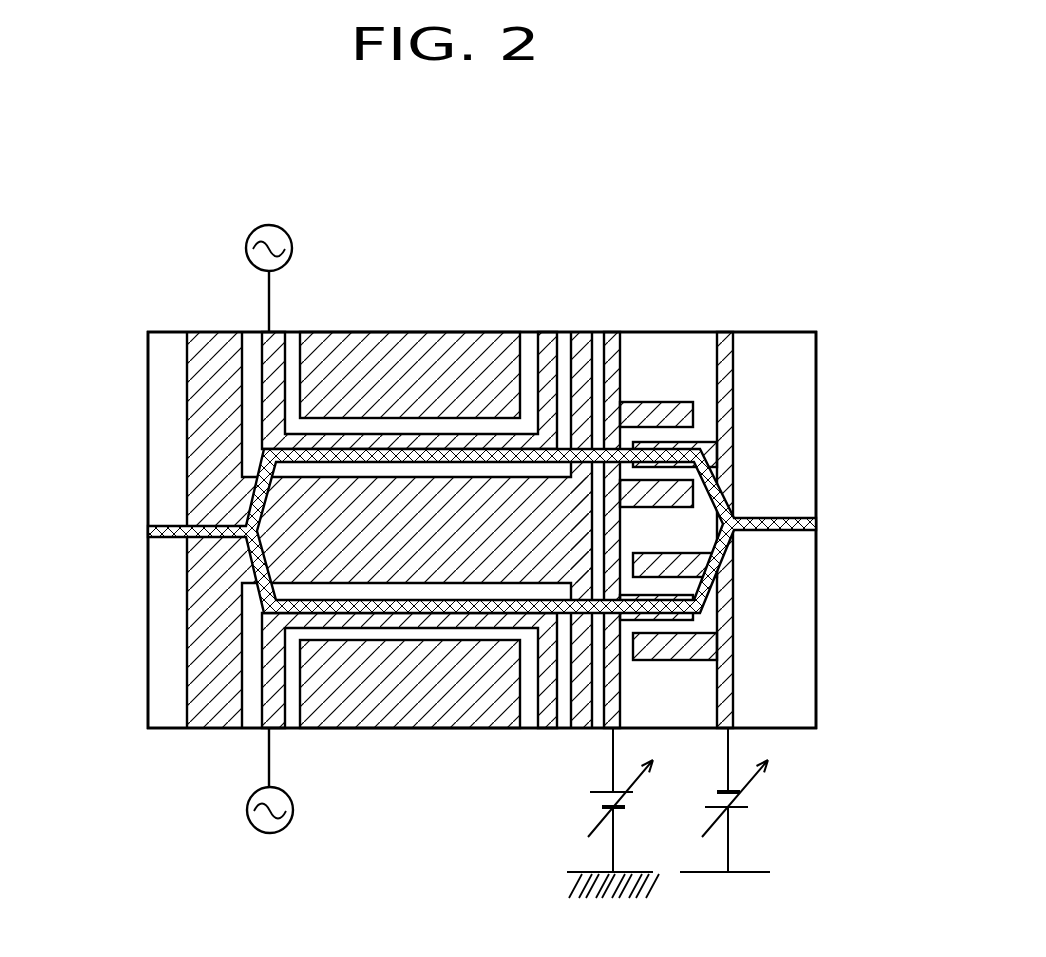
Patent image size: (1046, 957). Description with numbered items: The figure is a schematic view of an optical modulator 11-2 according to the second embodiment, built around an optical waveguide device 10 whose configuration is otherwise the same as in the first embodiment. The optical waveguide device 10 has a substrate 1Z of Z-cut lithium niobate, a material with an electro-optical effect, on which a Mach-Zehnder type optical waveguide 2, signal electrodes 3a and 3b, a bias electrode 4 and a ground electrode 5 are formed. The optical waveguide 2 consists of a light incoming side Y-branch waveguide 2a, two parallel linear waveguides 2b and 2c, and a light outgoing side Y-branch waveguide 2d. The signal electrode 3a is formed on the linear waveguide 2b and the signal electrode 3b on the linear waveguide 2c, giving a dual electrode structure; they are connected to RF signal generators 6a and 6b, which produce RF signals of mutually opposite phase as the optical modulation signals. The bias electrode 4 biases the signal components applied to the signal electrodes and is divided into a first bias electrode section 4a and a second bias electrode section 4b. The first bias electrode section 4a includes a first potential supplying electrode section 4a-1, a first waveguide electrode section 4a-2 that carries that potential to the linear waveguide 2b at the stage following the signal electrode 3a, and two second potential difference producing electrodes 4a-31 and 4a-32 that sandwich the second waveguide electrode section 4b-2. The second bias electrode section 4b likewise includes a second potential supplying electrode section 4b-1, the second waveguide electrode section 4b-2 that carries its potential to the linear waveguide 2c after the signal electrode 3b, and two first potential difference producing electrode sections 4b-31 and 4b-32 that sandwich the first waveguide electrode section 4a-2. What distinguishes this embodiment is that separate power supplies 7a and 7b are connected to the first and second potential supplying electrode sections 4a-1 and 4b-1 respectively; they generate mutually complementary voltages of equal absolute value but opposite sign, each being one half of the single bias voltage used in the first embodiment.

The optical modulator 11-2 is at (119, 304).
The optical waveguide device 10 is at (145, 748).
The substrate 1Z is at (817, 332).
The optical waveguide 2 is at (490, 528).
The light incoming side Y-branch waveguide 2a is at (222, 525).
The linear waveguide 2b is at (362, 457).
The linear waveguide 2c is at (358, 603).
The light outgoing side Y-branch waveguide 2d is at (740, 515).
The signal electrode 3a is at (490, 447).
The signal electrode 3b is at (268, 697).
The bias electrode 4 is at (750, 499).
The first bias electrode section 4a is at (769, 494).
The first potential supplying electrode section 4a-1 is at (735, 393).
The first waveguide electrode section 4a-2 is at (700, 443).
The second potential difference producing electrode 4a-31 is at (650, 550).
The second potential difference producing electrode 4a-32 is at (680, 660).
The second bias electrode section 4b is at (744, 484).
The second potential supplying electrode section 4b-1 is at (625, 368).
The second waveguide electrode section 4b-2 is at (693, 600).
The first potential difference producing electrode section 4b-31 is at (645, 400).
The first potential difference producing electrode section 4b-32 is at (733, 453).
The ground electrode 5 is at (340, 345).
The RF signal generator 6a is at (268, 225).
The RF signal generator 6b is at (270, 833).
The power supply 7a is at (745, 808).
The power supply 7b is at (610, 790).